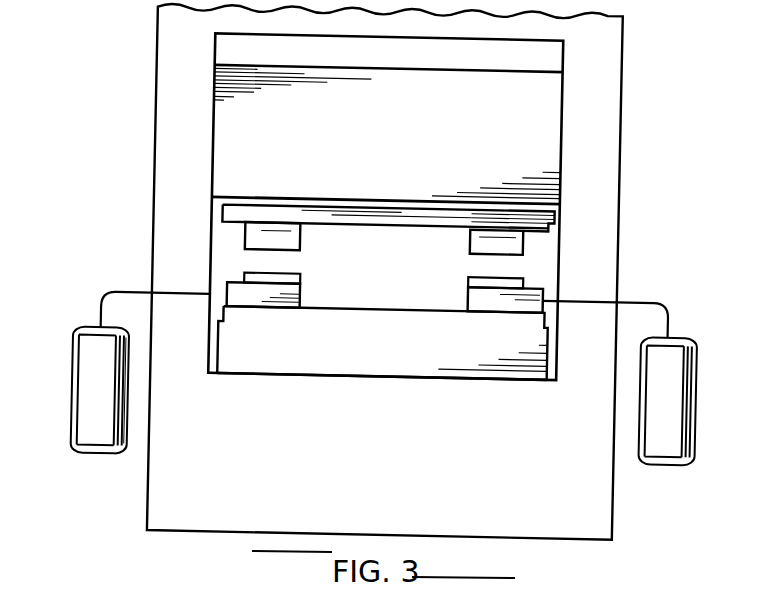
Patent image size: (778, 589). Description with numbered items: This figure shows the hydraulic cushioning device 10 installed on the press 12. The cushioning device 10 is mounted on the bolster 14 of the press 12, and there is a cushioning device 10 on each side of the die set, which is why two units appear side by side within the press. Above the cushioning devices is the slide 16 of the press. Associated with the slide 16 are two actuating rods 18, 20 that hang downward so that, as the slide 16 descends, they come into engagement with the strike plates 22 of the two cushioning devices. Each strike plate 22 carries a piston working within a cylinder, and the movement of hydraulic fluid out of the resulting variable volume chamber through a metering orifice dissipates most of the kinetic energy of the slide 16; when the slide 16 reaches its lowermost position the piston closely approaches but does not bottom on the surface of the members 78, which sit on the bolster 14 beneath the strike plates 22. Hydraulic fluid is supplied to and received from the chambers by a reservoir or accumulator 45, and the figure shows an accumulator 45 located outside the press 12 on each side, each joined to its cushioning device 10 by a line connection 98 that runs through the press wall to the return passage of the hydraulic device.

The cushioning device 10 is at (307, 300).
The press 12 is at (619, 168).
The bolster 14 is at (372, 312).
The slide 16 is at (546, 120).
The actuating rod 18 is at (286, 242).
The actuating rod 20 is at (466, 236).
The strike plate 22 is at (240, 281).
The accumulator 45 is at (74, 402).
The member 78 is at (258, 303).
The line connection 98 is at (103, 299).